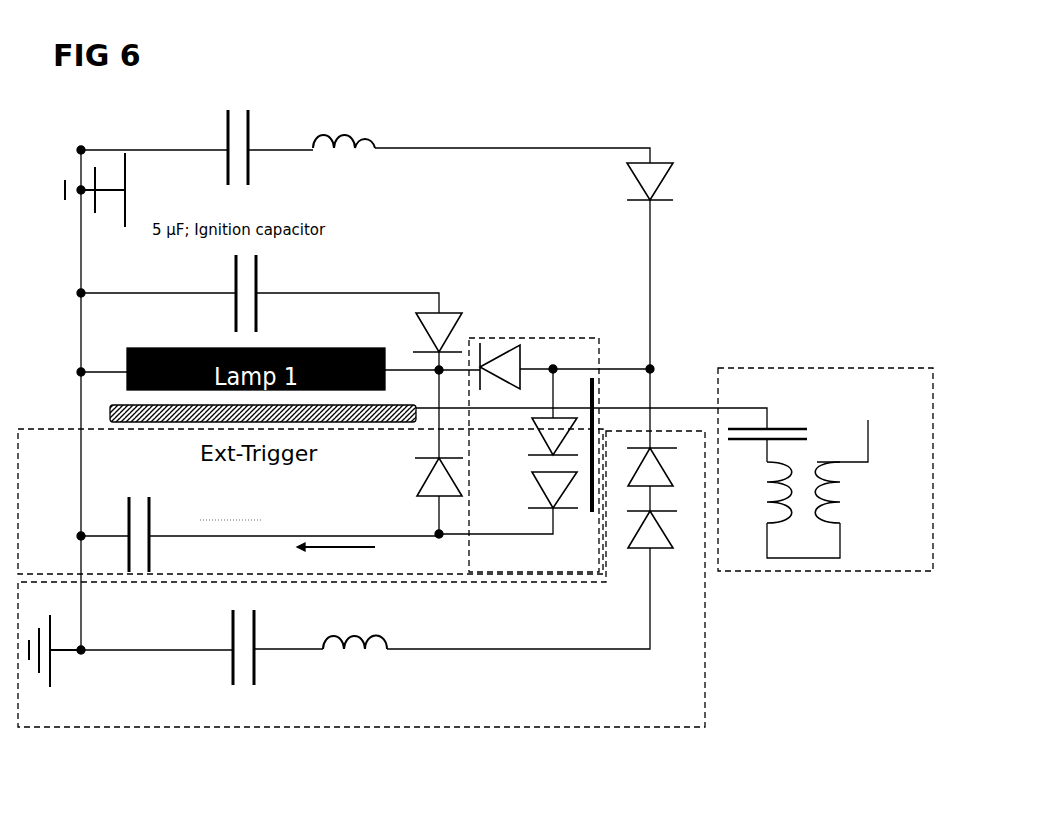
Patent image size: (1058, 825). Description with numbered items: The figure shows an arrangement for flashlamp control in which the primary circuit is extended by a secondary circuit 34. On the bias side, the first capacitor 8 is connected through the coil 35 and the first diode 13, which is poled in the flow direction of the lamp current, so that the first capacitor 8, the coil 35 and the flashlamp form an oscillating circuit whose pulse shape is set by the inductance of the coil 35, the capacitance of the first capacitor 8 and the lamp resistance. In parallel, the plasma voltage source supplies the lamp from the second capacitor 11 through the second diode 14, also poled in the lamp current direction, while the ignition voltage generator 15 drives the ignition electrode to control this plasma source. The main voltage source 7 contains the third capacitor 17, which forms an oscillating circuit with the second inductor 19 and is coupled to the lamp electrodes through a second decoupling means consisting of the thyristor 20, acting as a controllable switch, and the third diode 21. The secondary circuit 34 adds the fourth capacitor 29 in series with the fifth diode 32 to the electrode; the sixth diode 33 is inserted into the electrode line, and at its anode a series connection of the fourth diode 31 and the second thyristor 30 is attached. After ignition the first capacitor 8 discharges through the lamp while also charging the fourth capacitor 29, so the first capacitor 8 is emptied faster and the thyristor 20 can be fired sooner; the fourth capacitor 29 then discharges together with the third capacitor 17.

The main voltage source 7 is at (361, 601).
The first capacitor 8 is at (250, 173).
The second capacitor 11 is at (262, 320).
The first diode 13 is at (677, 197).
The second diode 14 is at (465, 320).
The ignition voltage generator 15 is at (856, 572).
The third capacitor 17 is at (241, 681).
The second inductor 19 is at (378, 653).
The thyristor 20 is at (660, 540).
The third diode 21 is at (660, 470).
The fourth capacitor 29 is at (148, 556).
The second thyristor 30 is at (545, 493).
The fourth diode 31 is at (538, 436).
The fifth diode 32 is at (452, 487).
The sixth diode 33 is at (495, 365).
The secondary circuit 34 is at (544, 437).
The coil 35 is at (342, 151).